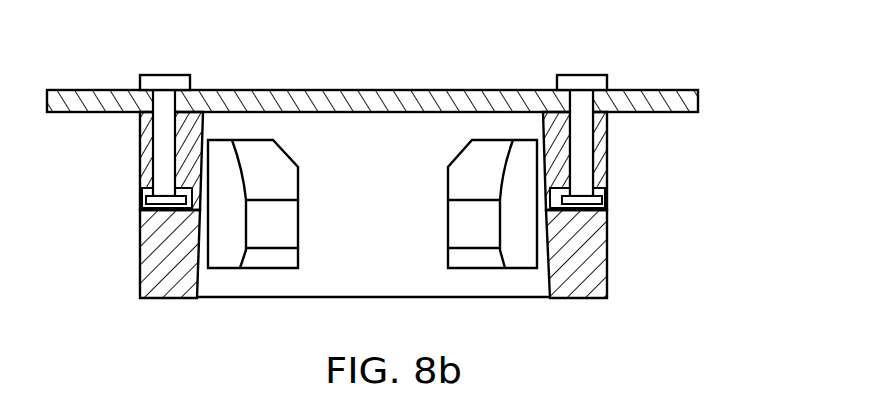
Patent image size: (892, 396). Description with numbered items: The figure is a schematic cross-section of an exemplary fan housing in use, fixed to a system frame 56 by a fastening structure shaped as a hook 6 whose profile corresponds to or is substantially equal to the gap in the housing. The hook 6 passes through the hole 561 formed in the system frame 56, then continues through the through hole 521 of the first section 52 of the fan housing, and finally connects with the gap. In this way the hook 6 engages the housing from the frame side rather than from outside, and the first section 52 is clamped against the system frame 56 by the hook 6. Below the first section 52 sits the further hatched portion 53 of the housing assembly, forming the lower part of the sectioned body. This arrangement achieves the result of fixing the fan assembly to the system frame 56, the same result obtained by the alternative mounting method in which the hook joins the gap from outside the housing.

The hook 6 is at (583, 86).
The hole 561 is at (614, 90).
The system frame 56 is at (672, 90).
The through hole 521 is at (607, 152).
The first section 52 is at (607, 177).
The base block 53 is at (607, 262).